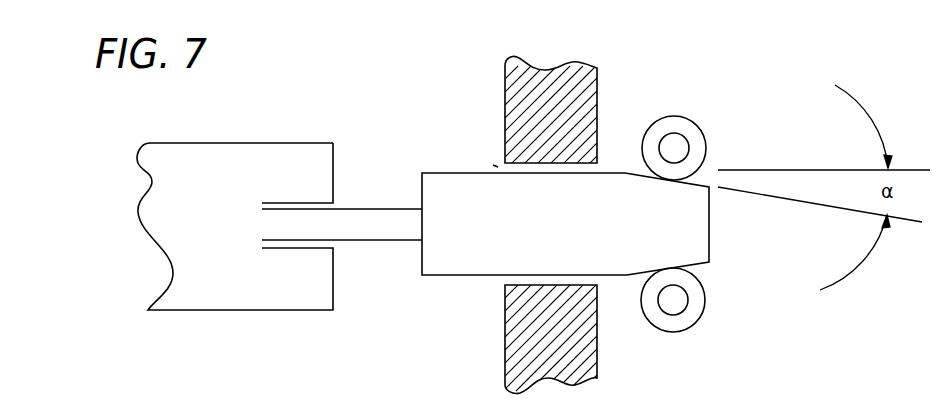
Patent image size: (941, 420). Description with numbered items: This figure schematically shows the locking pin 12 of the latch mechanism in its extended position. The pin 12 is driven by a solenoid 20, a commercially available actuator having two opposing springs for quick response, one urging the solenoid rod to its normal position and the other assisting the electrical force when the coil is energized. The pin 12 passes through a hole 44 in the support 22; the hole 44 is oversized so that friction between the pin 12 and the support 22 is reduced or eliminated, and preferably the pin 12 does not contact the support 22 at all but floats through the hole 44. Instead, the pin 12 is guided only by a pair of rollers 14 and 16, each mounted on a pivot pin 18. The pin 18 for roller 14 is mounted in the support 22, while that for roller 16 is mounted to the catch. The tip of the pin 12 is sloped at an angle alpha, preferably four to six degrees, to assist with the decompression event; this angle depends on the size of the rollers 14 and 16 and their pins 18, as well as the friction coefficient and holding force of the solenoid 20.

The pin 12 is at (565, 224).
The roller 14 is at (674, 116).
The roller 16 is at (672, 332).
The pin 18 is at (676, 149).
The solenoid 20 is at (279, 226).
The support 22 is at (553, 87).
The hole 44 is at (498, 167).